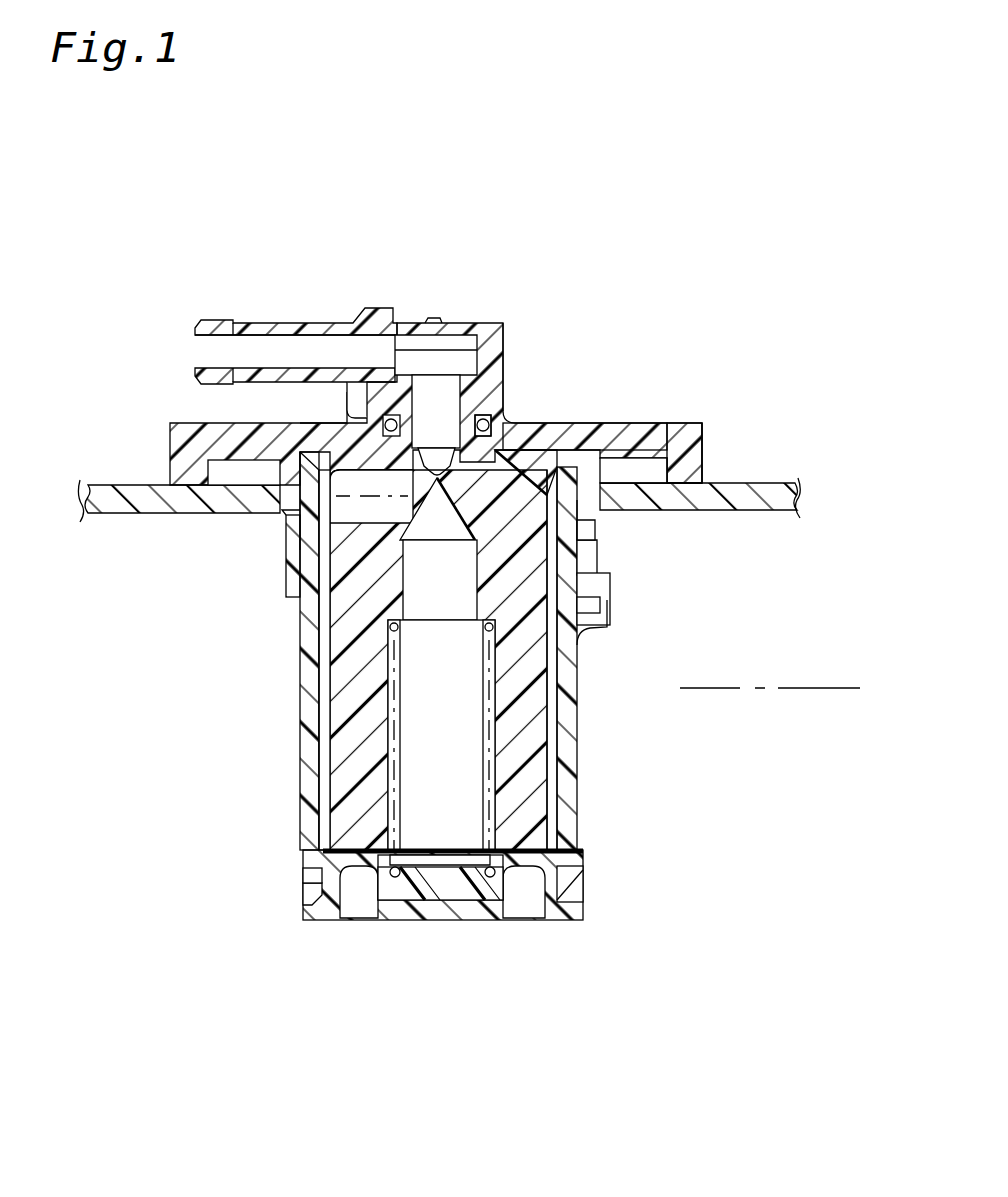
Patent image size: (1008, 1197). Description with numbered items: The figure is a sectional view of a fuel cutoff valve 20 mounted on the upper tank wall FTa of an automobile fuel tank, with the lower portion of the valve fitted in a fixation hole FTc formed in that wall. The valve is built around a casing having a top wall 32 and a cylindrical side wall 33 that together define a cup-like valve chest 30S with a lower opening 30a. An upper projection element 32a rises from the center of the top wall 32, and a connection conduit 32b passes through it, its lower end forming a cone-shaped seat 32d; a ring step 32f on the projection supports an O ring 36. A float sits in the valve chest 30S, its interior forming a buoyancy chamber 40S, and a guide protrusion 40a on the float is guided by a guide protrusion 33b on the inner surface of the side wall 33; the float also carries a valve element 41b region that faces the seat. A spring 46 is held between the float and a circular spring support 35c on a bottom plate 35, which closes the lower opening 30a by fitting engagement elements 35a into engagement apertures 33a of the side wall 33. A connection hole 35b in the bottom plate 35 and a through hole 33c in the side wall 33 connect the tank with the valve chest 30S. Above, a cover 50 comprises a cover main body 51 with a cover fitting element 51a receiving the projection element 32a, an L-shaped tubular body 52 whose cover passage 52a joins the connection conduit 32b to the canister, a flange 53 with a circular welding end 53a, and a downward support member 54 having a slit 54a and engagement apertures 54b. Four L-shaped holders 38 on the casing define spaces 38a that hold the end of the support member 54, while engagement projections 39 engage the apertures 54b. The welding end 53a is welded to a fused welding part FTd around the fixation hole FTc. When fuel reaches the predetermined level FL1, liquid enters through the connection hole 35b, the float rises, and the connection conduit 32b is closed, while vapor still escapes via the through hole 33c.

The fuel cutoff valve 20 is at (685, 327).
The cover 50 is at (503, 312).
The cover main body 51 is at (553, 440).
The cover fitting element 51a is at (477, 380).
The tubular body 52 is at (315, 325).
The cover passage 52a is at (255, 350).
The flange 53 is at (632, 440).
The circular welding end 53a is at (712, 508).
The top wall 32 is at (278, 505).
The upper projection element 32a is at (383, 388).
The connection conduit 32b is at (400, 395).
The cone-shaped seat 32d is at (535, 496).
The ring step 32f is at (500, 420).
The O ring 36 is at (493, 417).
The valve seat cone 41b is at (452, 508).
The spring 46 is at (487, 738).
The guide protrusion 40a is at (330, 777).
The buoyancy chamber 40S is at (450, 793).
The side wall 33 is at (300, 672).
The engagement apertures 33a is at (303, 880).
The guide protrusion 33b is at (330, 735).
The through hole 33c is at (313, 540).
The valve chest 30S is at (325, 690).
The lower opening 30a is at (583, 893).
The support member 54 is at (590, 563).
The slit 54a is at (290, 555).
The engagement apertures 54b is at (588, 530).
The engagement projections 39 is at (585, 538).
The holders 38 is at (597, 600).
The space 38a is at (600, 632).
The bottom plate 35 is at (553, 910).
The engagement elements 35a is at (313, 873).
The connection hole 35b is at (427, 887).
The spring support 35c is at (395, 858).
The welding part FTd is at (183, 485).
The upper tank wall FTa is at (757, 497).
The fixation hole FTc is at (700, 423).
The predetermined level FL1 is at (790, 688).